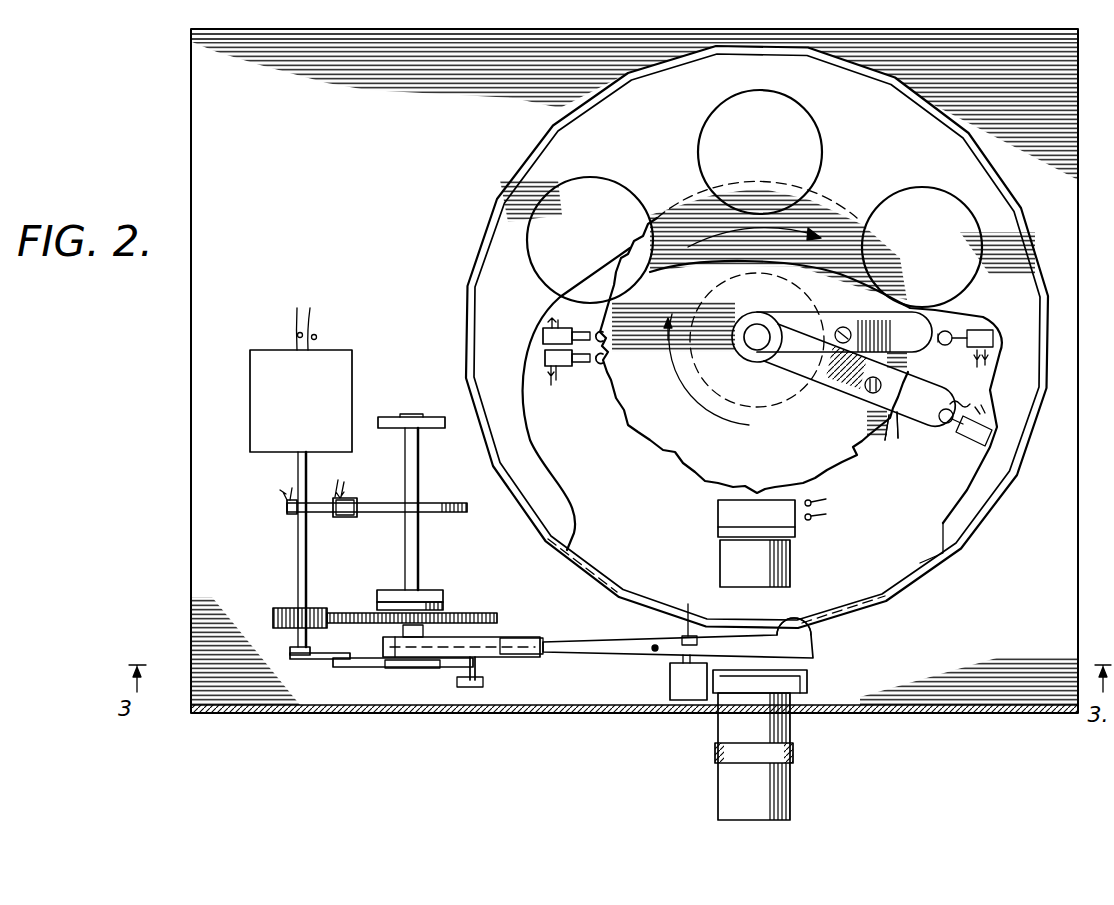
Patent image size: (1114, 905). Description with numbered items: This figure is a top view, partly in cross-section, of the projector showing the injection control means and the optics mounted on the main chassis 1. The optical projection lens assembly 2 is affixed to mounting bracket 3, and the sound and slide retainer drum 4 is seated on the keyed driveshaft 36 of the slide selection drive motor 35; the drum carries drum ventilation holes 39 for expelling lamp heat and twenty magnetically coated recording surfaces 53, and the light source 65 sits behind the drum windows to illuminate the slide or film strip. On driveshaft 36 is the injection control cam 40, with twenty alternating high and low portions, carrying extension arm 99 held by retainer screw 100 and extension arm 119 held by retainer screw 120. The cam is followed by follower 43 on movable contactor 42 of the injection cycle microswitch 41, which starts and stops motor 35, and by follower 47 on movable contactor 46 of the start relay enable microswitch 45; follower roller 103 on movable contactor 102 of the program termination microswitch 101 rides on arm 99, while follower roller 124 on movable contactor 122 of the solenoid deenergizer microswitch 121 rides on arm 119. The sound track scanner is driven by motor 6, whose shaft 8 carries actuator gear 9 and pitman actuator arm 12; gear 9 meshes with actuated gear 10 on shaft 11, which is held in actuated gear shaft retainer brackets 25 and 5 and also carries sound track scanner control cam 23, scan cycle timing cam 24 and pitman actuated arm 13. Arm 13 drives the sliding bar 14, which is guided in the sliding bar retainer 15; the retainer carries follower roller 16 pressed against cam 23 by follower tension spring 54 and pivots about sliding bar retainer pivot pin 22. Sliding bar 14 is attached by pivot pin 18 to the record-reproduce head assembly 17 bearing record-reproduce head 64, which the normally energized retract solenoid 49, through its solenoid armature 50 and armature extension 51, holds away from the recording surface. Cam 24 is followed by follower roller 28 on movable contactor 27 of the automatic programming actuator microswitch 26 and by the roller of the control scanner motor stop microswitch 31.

The main chassis 1 is at (191, 107).
The optical projection lens assembly 2 is at (790, 790).
The mounting bracket 3 is at (806, 678).
The sound and slide retainer drum 4 is at (518, 157).
The actuated gear shaft retainer bracket 5 is at (390, 590).
The sound track scanner drive motor 6 is at (257, 397).
The motor shaft 8 is at (297, 565).
The actuator gear 9 is at (283, 612).
The actuated gear 10 is at (480, 612).
The actuated gear shaft 11 is at (413, 462).
The pitman actuator arm 12 is at (317, 660).
The pitman actuated arm 13 is at (367, 668).
The sliding bar 14 is at (537, 655).
The sliding bar retainer 15 is at (517, 640).
The follower roller 16 is at (430, 600).
The record-reproduce head assembly 17 is at (727, 646).
The pivot pin 18 is at (655, 645).
The sliding bar retainer pivot pin 22 is at (476, 668).
The sound track scanner control cam 23 is at (403, 630).
The scan cycle timing cam 24 is at (443, 503).
The actuated gear shaft retainer bracket 25 is at (433, 417).
The automatic programming actuator microswitch 26 is at (290, 514).
The movable contactor 27 is at (325, 495).
The follower roller 28 is at (350, 500).
The control scanner motor stop microswitch 31 is at (347, 517).
The slide selection drive motor 35 is at (750, 406).
The driveshaft 36 is at (757, 323).
The drum ventilation holes 39 is at (708, 135).
The injection control cam 40 is at (655, 447).
The injection cycle microswitch 41 is at (540, 330).
The movable contactor 42 is at (573, 330).
The follower 43 is at (608, 337).
The start relay enable microswitch 45 is at (545, 357).
The movable contactor 46 is at (580, 364).
The follower 47 is at (610, 362).
The record-reproduce head assembly retract solenoid 49 is at (667, 693).
The solenoid armature 50 is at (682, 660).
The armature extension 51 is at (690, 635).
The magnetically coated recording surface 53 is at (538, 527).
The follower tension spring 54 is at (410, 670).
The record-reproduce head 64 is at (800, 653).
The light source 65 is at (795, 549).
The extension arm 99 is at (826, 313).
The retainer screw 100 is at (845, 327).
The program termination microswitch 101 is at (994, 346).
The movable contactor 102 is at (952, 328).
The follower roller 103 is at (905, 355).
The extension arm 119 is at (888, 437).
The retainer screw 120 is at (860, 392).
The solenoid deenergizer microswitch 121 is at (974, 445).
The movable contactor 122 is at (945, 422).
The follower roller 124 is at (977, 406).